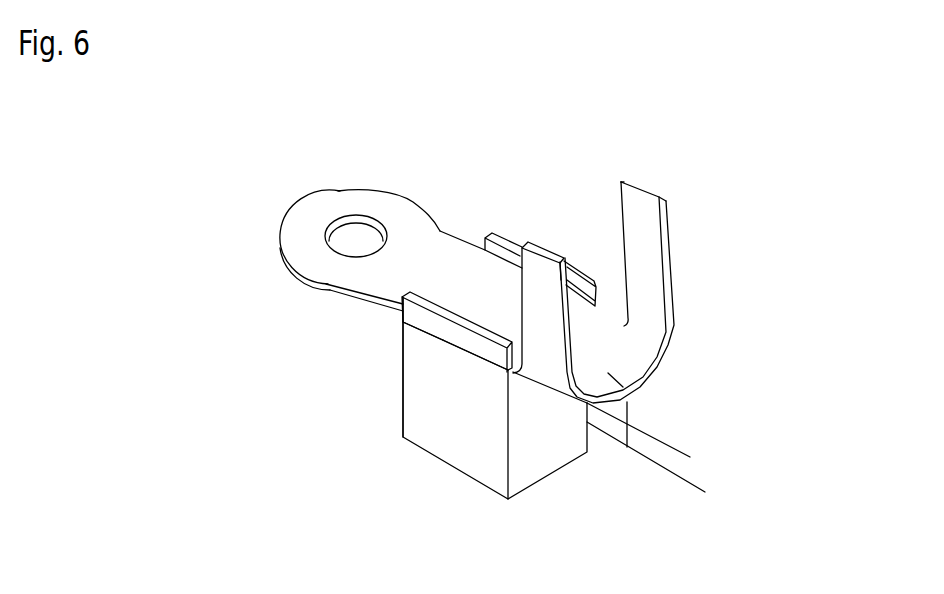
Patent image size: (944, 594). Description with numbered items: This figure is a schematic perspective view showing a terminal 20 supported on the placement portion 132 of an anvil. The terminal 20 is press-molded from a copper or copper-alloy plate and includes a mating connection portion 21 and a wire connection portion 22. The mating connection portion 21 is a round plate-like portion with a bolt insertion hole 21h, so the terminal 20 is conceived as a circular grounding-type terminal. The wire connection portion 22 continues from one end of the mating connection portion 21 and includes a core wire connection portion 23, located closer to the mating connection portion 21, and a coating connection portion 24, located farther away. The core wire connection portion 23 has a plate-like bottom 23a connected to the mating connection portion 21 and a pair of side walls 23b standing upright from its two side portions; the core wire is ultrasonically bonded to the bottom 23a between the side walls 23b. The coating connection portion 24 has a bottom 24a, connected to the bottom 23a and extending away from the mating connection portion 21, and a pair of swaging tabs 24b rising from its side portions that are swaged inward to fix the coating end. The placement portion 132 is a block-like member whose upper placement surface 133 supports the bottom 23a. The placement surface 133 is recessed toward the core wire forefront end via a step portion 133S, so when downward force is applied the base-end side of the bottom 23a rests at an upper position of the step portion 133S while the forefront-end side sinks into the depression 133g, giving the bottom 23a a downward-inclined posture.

The terminal 20 is at (502, 311).
The mating connection portion 21 is at (329, 191).
The bolt insertion hole 21h is at (347, 224).
The wire connection portion 22 is at (663, 355).
The core wire connection portion 23 is at (501, 233).
The bottom 23a is at (440, 285).
The side walls 23b is at (513, 240).
The coating connection portion 24 is at (663, 355).
The bottom 24a is at (612, 412).
The swaging tabs 24b is at (542, 278).
The placement portion 132 is at (537, 485).
The placement surface 133 is at (403, 333).
The depression 133g is at (443, 333).
The step portion 133S is at (450, 352).